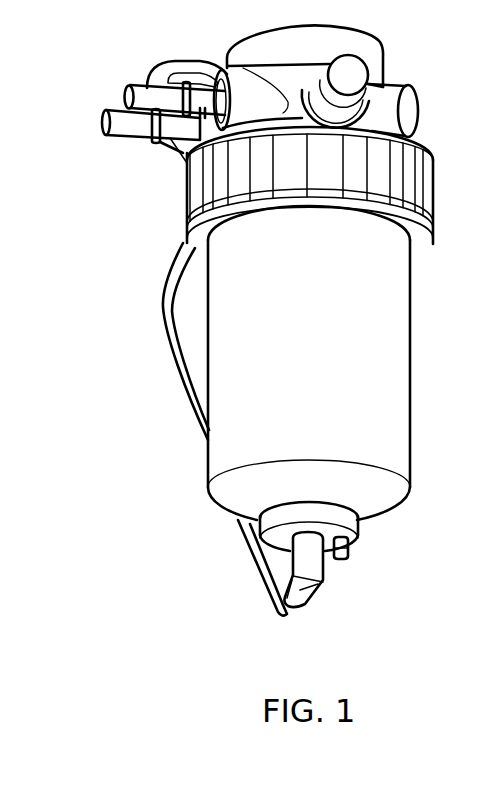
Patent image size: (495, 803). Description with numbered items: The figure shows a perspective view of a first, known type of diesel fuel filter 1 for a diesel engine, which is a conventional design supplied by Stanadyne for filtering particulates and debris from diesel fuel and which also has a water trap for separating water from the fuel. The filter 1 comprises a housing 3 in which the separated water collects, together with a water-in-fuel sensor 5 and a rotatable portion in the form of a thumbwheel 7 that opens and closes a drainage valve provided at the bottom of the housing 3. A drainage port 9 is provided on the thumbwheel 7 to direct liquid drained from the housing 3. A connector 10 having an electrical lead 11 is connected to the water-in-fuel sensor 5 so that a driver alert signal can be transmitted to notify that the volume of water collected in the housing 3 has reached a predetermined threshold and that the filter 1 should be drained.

The automotive fuel filter 1 is at (143, 388).
The housing 3 is at (383, 333).
The water-in-fuel (WIF) sensor 5 is at (308, 590).
The thumbwheel 7 is at (340, 515).
The drainage port 9 is at (342, 550).
The connector 10 is at (303, 558).
The electrical lead 11 is at (270, 595).